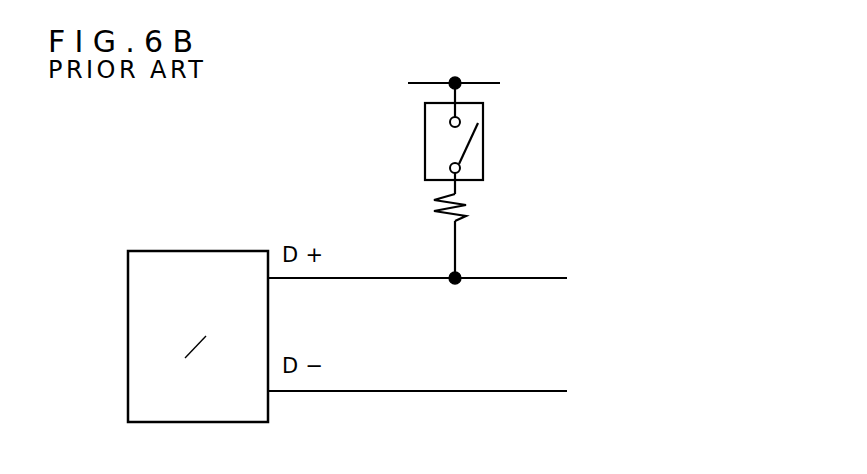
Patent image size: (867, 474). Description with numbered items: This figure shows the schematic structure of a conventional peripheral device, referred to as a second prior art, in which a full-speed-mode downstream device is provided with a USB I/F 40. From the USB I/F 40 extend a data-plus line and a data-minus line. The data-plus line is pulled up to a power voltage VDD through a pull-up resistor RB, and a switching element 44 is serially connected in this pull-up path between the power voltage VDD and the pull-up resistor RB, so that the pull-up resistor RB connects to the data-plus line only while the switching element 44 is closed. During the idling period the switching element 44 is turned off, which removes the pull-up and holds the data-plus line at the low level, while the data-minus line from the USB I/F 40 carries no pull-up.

The USB I/F 40 is at (213, 422).
The switching element 44 is at (484, 137).
The pull-up resistor RB is at (472, 225).
The power voltage VDD is at (487, 95).